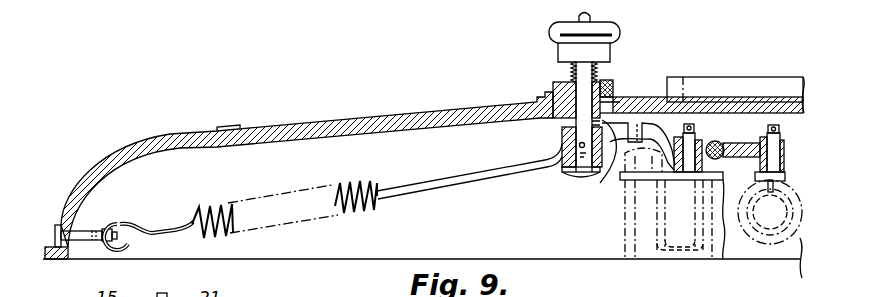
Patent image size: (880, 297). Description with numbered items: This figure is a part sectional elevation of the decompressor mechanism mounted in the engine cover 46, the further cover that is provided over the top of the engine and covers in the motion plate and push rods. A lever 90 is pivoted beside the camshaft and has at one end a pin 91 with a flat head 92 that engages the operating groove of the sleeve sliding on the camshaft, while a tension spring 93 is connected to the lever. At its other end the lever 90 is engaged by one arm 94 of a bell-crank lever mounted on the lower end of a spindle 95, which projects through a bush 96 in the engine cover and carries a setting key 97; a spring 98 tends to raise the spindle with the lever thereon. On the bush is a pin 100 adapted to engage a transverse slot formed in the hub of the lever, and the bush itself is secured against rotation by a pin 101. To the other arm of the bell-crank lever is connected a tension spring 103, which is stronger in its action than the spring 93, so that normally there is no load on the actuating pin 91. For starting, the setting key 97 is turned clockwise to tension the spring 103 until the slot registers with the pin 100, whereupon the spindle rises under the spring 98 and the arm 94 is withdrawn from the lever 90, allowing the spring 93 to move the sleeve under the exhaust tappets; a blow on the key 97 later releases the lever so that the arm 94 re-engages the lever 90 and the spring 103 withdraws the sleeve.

The cover 46 is at (192, 114).
The lever 90 is at (663, 123).
The pin 91 is at (776, 148).
The flat head 92 is at (787, 178).
The tension spring 93 is at (717, 141).
The arm of bell-crank lever 94 is at (614, 147).
The spindle 95 is at (577, 125).
The bush 96 is at (549, 82).
The setting key 97 is at (612, 24).
The spring 98 is at (567, 65).
The pin 100 is at (603, 121).
The pin 101 is at (608, 79).
The tension spring 103 is at (338, 180).